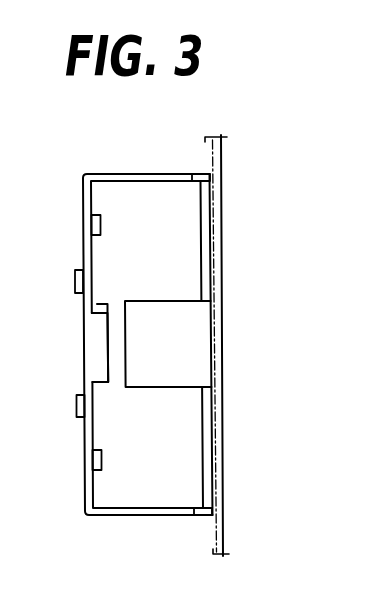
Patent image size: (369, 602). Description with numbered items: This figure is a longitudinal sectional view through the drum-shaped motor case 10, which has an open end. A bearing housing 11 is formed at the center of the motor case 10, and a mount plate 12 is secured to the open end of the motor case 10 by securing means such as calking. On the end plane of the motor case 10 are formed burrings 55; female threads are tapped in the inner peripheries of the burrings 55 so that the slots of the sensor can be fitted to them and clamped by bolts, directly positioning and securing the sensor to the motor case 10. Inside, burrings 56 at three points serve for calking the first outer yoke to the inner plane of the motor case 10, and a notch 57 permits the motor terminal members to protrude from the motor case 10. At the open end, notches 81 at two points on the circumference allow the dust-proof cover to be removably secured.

The motor case 10 is at (106, 168).
The bearing housing 11 is at (99, 302).
The mount plate 12 is at (222, 228).
The burrings 55 is at (77, 272).
The burrings 56 is at (101, 222).
The notch 57 is at (170, 302).
The notches 81 is at (196, 177).